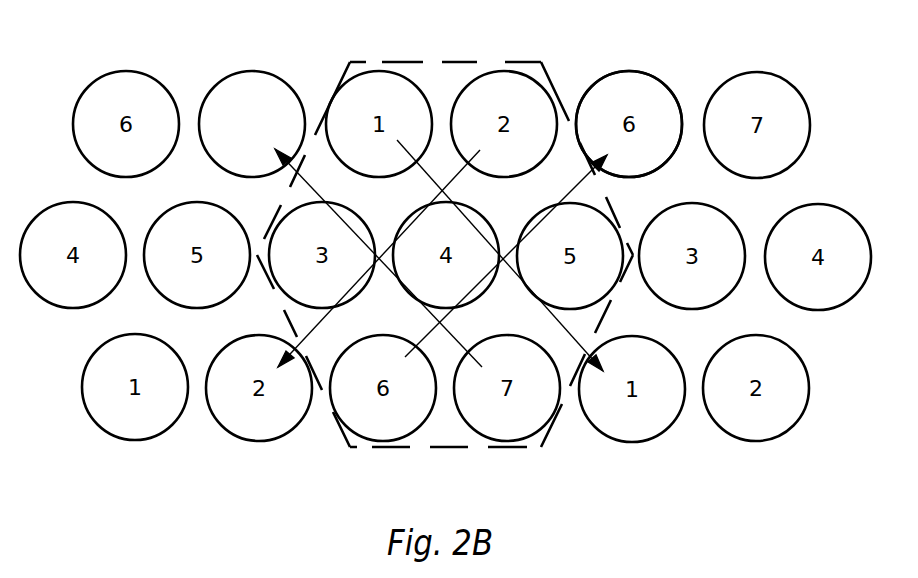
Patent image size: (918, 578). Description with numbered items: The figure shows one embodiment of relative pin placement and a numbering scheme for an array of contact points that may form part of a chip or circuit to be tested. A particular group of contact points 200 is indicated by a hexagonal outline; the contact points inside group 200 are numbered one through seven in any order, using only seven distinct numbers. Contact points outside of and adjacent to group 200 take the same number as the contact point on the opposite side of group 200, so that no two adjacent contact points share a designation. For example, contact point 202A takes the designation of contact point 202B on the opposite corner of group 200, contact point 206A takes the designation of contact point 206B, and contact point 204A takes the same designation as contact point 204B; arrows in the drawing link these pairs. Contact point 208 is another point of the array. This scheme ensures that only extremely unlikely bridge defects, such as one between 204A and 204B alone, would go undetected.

The group of contact points 200 is at (445, 236).
The contact point 202A is at (245, 406).
The contact point 202B is at (488, 101).
The contact point 204A is at (644, 409).
The contact point 204B is at (363, 99).
The contact point 206A is at (239, 103).
The contact point 206B is at (519, 411).
The element 6 208 is at (635, 105).